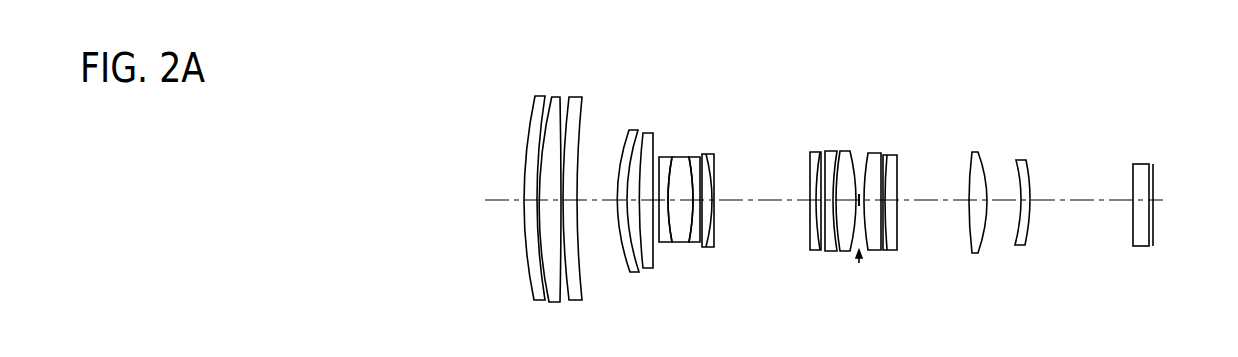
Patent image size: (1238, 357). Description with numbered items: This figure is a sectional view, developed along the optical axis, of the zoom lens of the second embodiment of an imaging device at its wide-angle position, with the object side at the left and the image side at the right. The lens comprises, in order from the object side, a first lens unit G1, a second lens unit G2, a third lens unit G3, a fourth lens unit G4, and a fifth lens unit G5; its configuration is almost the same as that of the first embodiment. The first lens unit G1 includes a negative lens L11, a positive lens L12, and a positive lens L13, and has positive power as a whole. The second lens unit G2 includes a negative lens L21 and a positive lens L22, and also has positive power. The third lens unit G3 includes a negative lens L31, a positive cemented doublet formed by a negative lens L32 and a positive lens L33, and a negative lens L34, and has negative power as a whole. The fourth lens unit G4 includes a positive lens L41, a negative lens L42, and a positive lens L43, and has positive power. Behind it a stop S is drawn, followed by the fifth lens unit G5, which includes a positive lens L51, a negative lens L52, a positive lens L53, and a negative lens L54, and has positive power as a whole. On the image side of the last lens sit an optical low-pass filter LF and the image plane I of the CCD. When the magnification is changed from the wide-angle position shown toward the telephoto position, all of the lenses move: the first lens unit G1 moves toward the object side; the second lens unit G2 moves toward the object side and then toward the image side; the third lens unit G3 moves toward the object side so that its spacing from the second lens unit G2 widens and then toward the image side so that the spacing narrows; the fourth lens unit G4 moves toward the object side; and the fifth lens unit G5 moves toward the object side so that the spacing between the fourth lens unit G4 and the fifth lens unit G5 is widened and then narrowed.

The negative lens L11 is at (537, 96).
The positive lens L12 is at (558, 97).
The positive lens L13 is at (577, 97).
The negative lens L21 is at (634, 130).
The positive lens L22 is at (651, 133).
The negative lens L31 is at (662, 157).
The negative lens L32 is at (682, 157).
The positive lens L33 is at (702, 157).
The negative lens L34 is at (712, 154).
The positive lens L41 is at (812, 152).
The negative lens L42 is at (828, 151).
The positive lens L43 is at (843, 151).
The stop S is at (856, 144).
The positive lens L51 is at (878, 153).
The negative lens L52 is at (887, 155).
The positive lens L53 is at (975, 152).
The negative lens L54 is at (1022, 160).
The optical low-pass filter LF is at (1143, 246).
The image plane I is at (1153, 237).
The first lens unit G1 is at (551, 204).
The second lens unit G2 is at (636, 189).
The third lens unit G3 is at (706, 183).
The fourth lens unit G4 is at (815, 184).
The fifth lens unit G5 is at (948, 184).